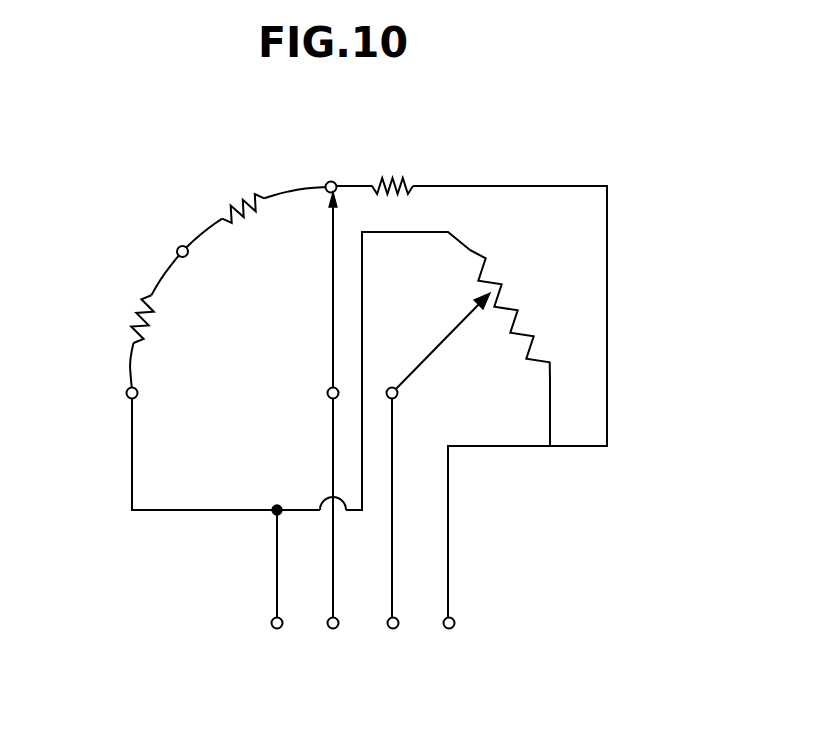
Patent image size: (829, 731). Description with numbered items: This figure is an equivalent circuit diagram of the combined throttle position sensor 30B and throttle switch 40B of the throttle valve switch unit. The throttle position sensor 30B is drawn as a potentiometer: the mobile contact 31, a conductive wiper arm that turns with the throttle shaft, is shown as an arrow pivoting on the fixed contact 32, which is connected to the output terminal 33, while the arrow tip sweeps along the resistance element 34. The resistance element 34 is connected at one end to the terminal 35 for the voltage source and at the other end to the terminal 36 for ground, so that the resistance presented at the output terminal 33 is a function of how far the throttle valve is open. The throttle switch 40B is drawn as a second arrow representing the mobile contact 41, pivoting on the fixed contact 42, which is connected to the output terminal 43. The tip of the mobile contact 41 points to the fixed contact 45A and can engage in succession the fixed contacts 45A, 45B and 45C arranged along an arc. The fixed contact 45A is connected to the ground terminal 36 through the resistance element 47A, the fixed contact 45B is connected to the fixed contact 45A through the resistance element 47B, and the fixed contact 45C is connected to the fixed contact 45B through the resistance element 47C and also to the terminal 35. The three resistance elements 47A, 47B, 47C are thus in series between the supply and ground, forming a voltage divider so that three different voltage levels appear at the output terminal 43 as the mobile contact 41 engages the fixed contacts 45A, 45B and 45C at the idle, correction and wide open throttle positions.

The throttle position sensor 30B is at (512, 470).
The throttle switch 40B is at (218, 528).
The mobile contact 31 is at (437, 347).
The fixed contact 32 is at (398, 394).
The output terminal 33 is at (394, 630).
The resistance element 34 is at (535, 312).
The terminal 35 is at (276, 630).
The terminal 36 is at (451, 630).
The mobile contact 41 is at (330, 324).
The fixed contact 42 is at (327, 394).
The output terminal 43 is at (334, 630).
The fixed contact 45A is at (330, 181).
The fixed contact 45B is at (177, 247).
The fixed contact 45C is at (127, 398).
The resistance element 47A is at (408, 188).
The resistance element 47B is at (241, 203).
The resistance element 47C is at (141, 311).